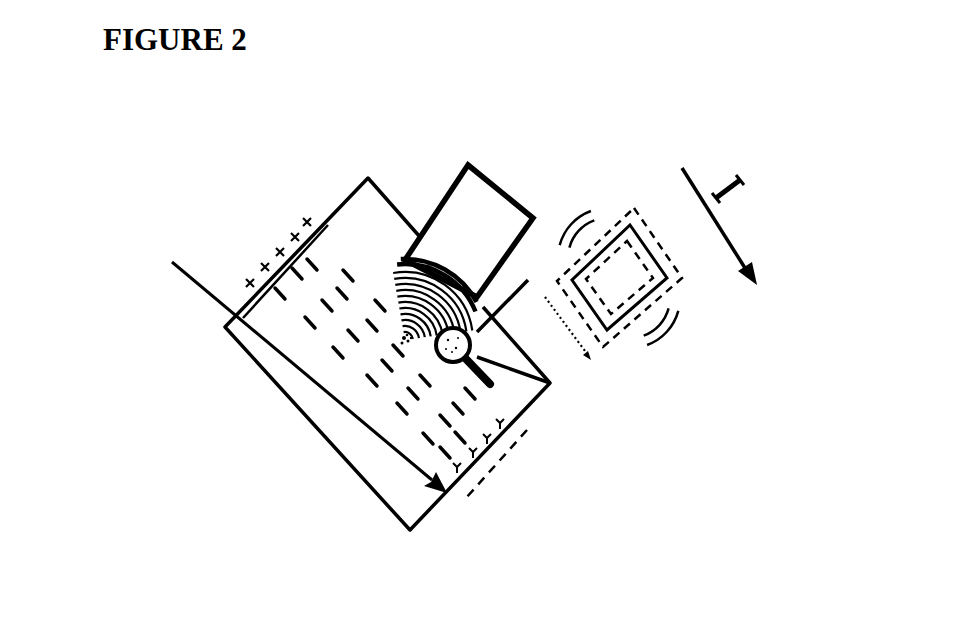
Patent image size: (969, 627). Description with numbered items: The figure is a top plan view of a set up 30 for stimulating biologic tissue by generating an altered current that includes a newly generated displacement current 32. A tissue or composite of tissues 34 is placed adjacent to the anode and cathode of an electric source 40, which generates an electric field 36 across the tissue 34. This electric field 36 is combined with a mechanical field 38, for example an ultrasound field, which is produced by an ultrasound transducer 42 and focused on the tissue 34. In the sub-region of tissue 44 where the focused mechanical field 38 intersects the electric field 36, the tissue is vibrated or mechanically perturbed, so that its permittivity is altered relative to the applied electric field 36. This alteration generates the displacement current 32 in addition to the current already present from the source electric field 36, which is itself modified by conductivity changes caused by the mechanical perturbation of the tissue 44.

The set up 30 is at (100, 290).
The displacement current 32 is at (750, 198).
The biologic tissue 34 is at (325, 496).
The electric field 36 is at (328, 238).
The mechanical field 38 is at (407, 283).
The electric source 40 is at (248, 255).
The ultrasound transducer 42 is at (480, 165).
The sub-region of tissue 44 is at (647, 225).